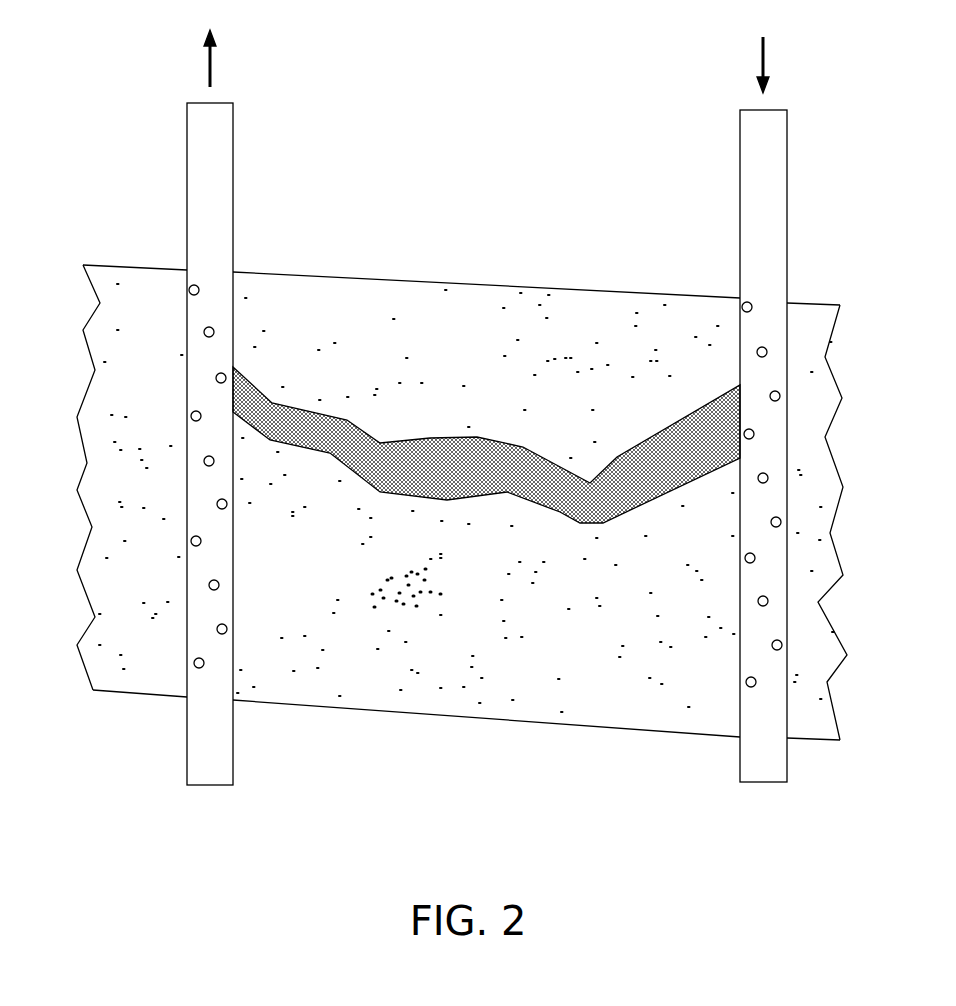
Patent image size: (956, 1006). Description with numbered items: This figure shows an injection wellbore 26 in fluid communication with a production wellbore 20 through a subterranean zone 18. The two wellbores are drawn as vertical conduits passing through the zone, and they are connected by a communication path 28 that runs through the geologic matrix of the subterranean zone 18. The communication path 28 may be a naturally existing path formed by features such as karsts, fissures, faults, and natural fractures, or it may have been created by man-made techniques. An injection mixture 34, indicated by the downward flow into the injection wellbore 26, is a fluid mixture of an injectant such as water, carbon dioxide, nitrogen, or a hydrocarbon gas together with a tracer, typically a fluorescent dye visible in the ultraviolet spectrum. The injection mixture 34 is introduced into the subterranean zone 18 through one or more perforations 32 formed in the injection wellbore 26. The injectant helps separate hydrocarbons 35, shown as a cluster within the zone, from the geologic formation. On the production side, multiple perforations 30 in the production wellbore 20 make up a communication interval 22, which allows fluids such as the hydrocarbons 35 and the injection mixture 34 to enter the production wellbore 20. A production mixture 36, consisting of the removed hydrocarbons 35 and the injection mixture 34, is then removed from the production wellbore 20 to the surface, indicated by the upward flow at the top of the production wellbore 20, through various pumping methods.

The subterranean zone 18 is at (423, 313).
The production wellbore 20 is at (233, 189).
The communication interval 22 is at (197, 568).
The injection wellbore 26 is at (739, 235).
The communication path 28 is at (457, 436).
The perforations 30 is at (200, 290).
The perforations 32 is at (744, 313).
The injection mixture 34 is at (758, 58).
The hydrocarbons 35 is at (417, 614).
The production mixture 36 is at (212, 66).